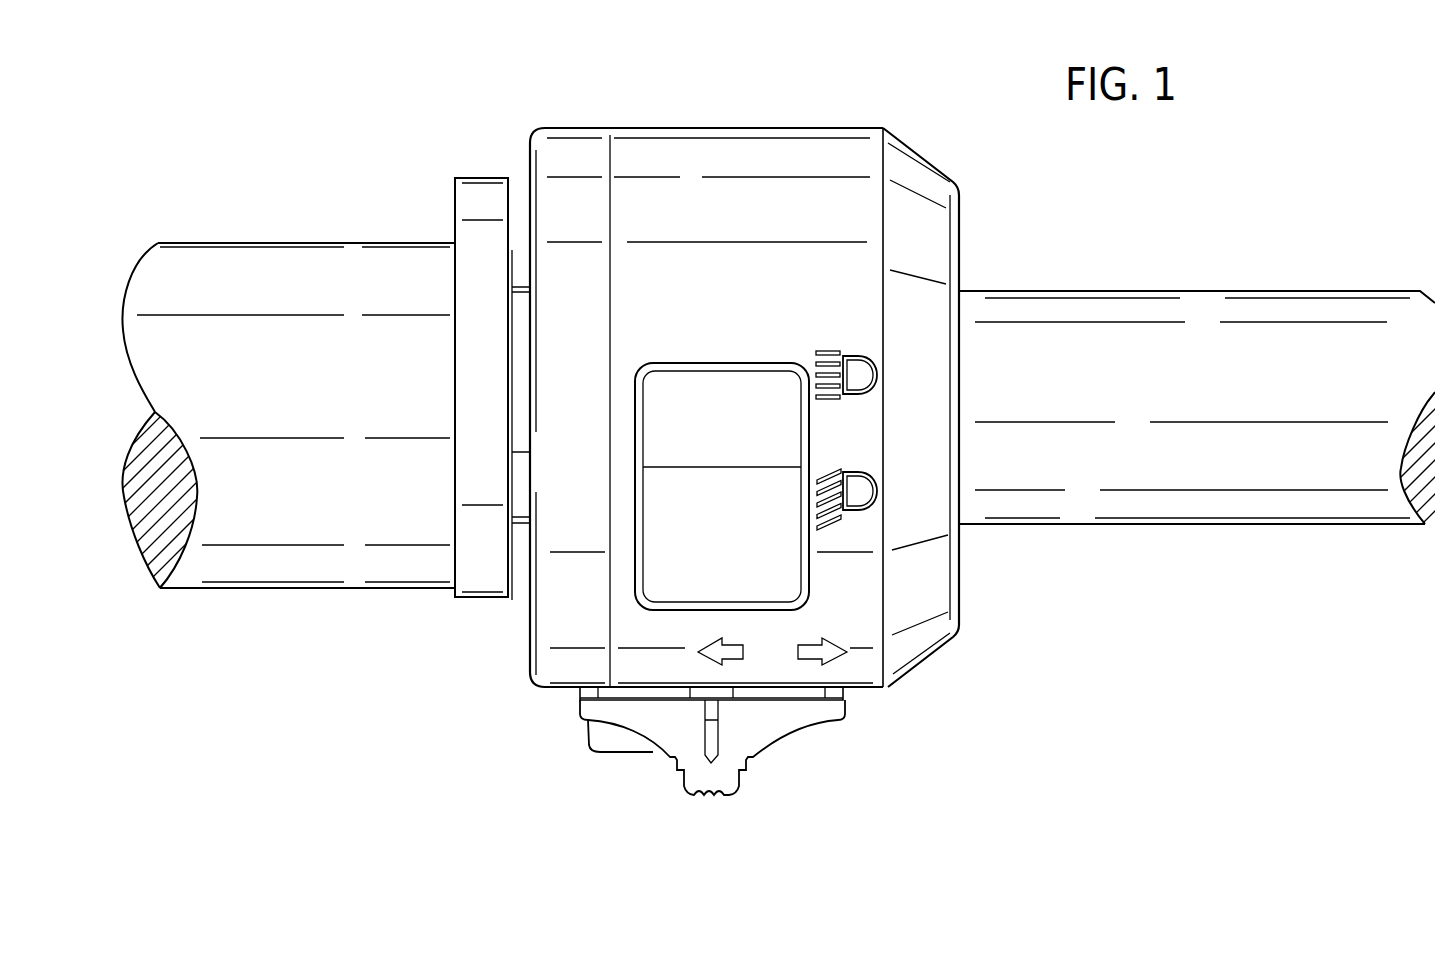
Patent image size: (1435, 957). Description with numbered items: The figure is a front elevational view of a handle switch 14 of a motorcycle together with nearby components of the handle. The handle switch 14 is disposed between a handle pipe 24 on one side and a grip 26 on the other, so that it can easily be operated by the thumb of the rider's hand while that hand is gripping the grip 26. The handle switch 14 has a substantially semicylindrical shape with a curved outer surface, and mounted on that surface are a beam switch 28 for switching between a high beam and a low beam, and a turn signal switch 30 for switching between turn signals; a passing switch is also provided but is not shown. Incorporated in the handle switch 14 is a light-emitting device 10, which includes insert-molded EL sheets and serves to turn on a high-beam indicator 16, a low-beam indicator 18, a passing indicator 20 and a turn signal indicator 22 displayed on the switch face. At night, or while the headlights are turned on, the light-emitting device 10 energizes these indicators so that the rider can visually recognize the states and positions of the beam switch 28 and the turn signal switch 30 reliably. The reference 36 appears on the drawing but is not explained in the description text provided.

The light-emitting device 10 is at (958, 179).
The handle switch 14 is at (480, 78).
The high-beam indicator 16 is at (858, 374).
The low-beam indicator 18 is at (858, 488).
The passing indicator 20 is at (757, 200).
The turn signal indicator 22 is at (812, 652).
The handle pipe 24 is at (1080, 500).
The grip 26 is at (355, 558).
The beam switch 28 is at (717, 383).
The turn signal switch 30 is at (677, 729).
The housing divider line 36 is at (651, 162).